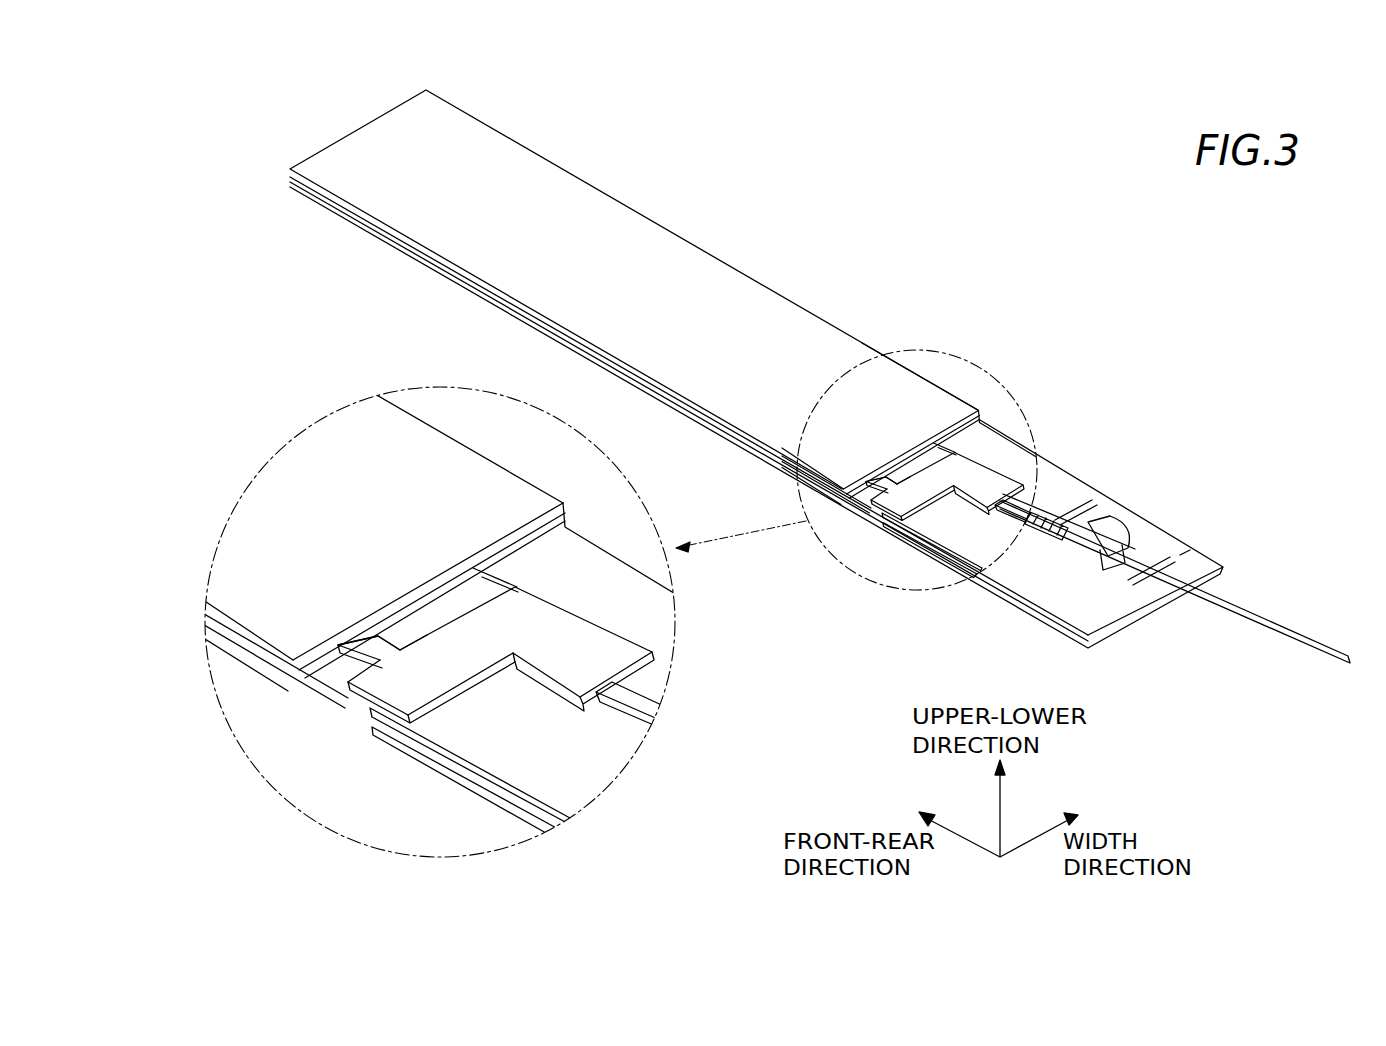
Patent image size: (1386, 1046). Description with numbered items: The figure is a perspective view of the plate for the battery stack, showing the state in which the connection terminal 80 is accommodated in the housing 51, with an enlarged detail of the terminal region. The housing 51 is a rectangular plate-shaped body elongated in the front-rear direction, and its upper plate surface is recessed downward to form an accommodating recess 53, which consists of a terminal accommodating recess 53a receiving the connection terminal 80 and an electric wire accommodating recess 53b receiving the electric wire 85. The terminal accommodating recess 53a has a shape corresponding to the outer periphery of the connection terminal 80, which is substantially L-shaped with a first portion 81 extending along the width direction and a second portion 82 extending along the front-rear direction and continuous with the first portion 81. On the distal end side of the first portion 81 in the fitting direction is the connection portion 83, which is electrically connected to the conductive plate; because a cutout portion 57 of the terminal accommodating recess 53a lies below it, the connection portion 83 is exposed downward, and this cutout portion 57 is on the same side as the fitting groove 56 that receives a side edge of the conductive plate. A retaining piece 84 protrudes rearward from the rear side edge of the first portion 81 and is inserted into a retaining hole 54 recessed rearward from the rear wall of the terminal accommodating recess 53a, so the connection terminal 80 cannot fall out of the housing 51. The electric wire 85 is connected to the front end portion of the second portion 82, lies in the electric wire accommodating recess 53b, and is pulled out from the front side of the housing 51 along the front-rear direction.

The housing 51 is at (570, 198).
The accommodating recess 53 is at (787, 437).
The terminal accommodating recess 53a is at (463, 593).
The electric wire accommodating recess 53b is at (1123, 533).
The retaining hole 54 is at (293, 660).
The fitting groove 56 is at (1105, 648).
The cutout portion 57 is at (873, 497).
The connection terminal 80 is at (878, 512).
The first portion 81 is at (938, 483).
The second portion 82 is at (990, 483).
The connection portion 83 is at (897, 515).
The retaining piece 84 is at (855, 480).
The electric wire 85 is at (1245, 607).